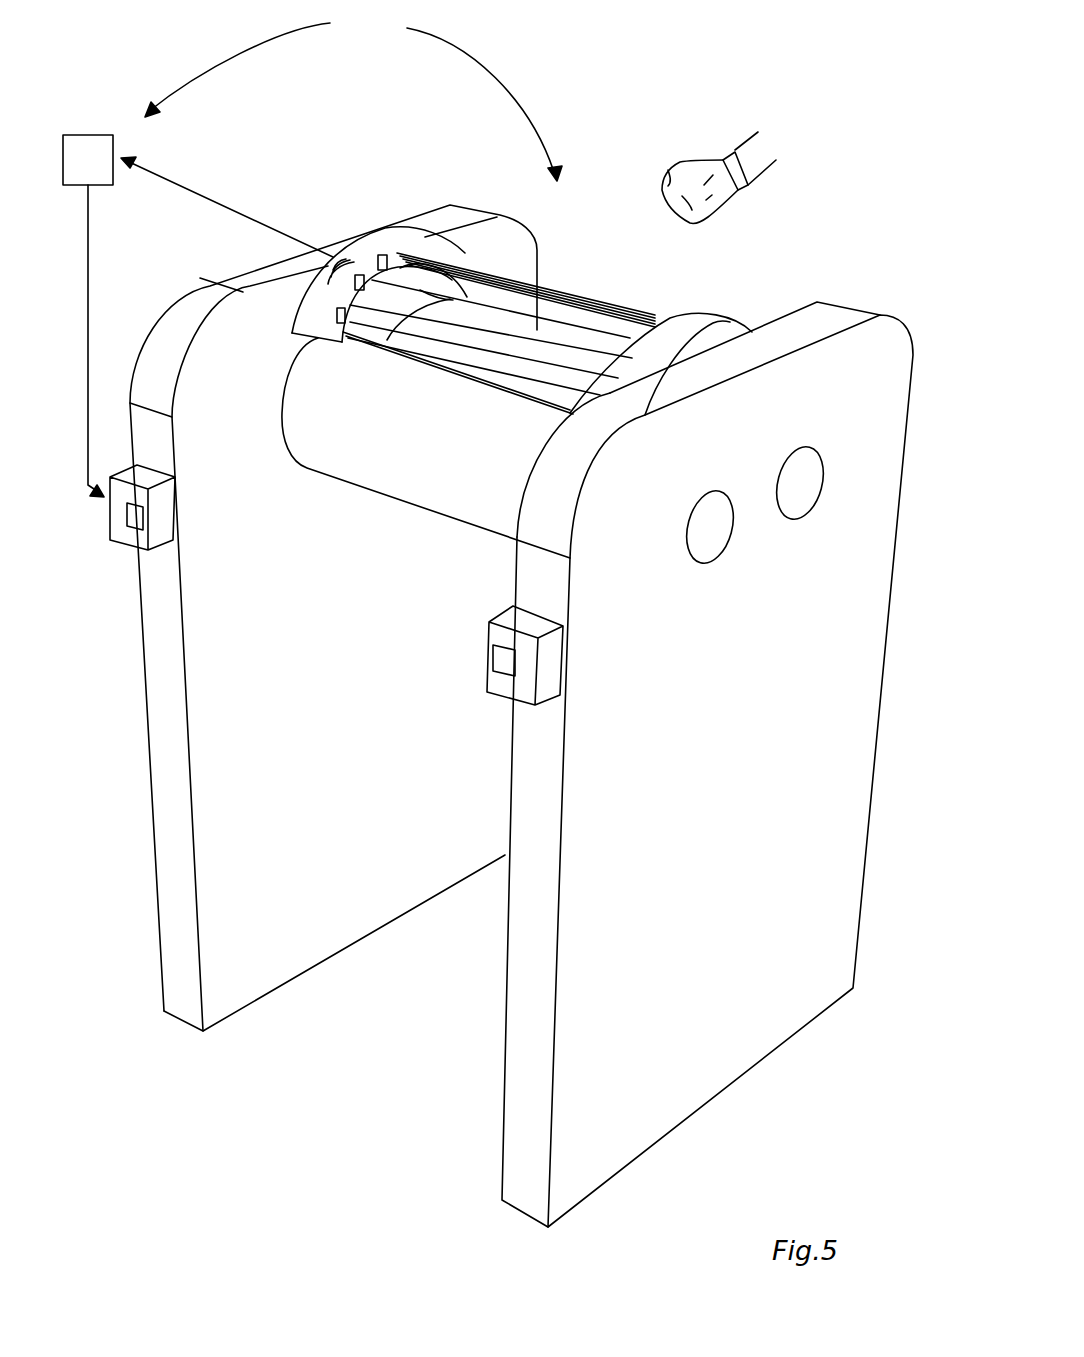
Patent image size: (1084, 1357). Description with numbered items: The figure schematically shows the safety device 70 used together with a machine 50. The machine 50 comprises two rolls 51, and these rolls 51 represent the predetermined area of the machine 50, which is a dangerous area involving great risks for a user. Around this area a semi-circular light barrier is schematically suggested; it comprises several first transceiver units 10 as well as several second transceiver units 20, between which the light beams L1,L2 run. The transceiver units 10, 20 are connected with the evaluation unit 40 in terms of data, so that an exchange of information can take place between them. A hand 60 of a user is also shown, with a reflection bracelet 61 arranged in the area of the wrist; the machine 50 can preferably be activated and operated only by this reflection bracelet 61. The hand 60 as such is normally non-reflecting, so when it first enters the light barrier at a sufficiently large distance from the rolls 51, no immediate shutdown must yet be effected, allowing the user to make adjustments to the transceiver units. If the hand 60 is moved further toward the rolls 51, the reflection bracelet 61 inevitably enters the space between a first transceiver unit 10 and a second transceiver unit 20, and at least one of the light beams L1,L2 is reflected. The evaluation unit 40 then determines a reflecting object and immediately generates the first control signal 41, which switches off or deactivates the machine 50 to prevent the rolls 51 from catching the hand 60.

The first transceiver unit 10 is at (362, 285).
The second transceiver unit 20 is at (607, 307).
The evaluation unit 40 is at (102, 185).
The first control signal 41 is at (88, 362).
The machine 50 is at (863, 538).
The rolls 51 is at (422, 493).
The hand 60 is at (680, 170).
The reflection bracelet 61 is at (745, 192).
The safety device 70 is at (353, 96).
The light beams L1,L2 is at (478, 362).